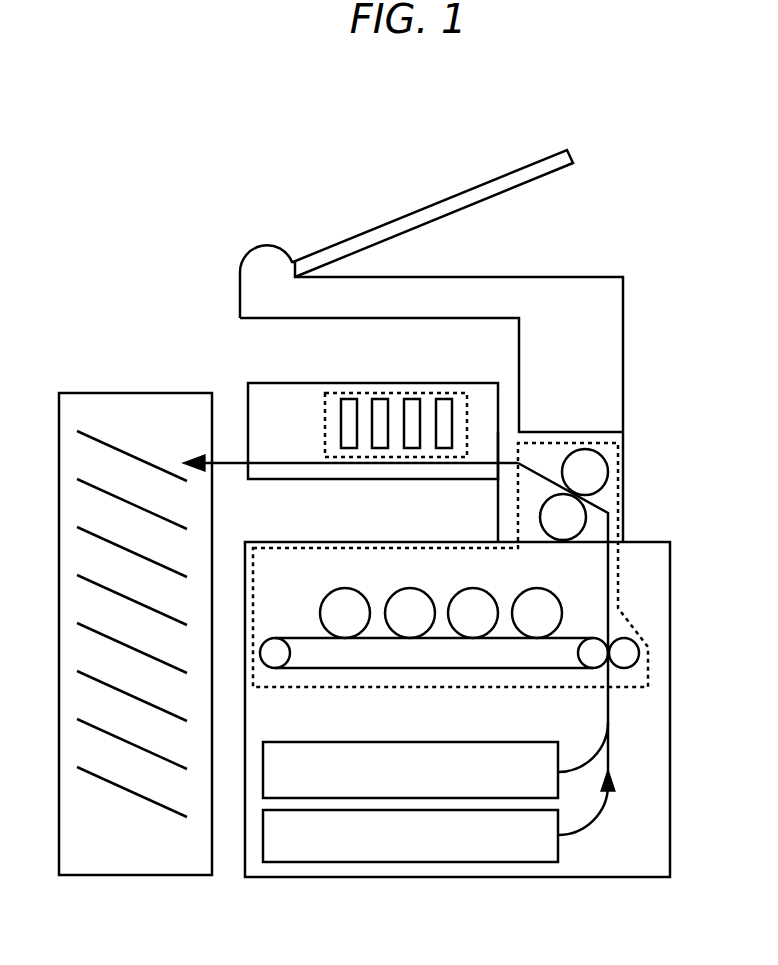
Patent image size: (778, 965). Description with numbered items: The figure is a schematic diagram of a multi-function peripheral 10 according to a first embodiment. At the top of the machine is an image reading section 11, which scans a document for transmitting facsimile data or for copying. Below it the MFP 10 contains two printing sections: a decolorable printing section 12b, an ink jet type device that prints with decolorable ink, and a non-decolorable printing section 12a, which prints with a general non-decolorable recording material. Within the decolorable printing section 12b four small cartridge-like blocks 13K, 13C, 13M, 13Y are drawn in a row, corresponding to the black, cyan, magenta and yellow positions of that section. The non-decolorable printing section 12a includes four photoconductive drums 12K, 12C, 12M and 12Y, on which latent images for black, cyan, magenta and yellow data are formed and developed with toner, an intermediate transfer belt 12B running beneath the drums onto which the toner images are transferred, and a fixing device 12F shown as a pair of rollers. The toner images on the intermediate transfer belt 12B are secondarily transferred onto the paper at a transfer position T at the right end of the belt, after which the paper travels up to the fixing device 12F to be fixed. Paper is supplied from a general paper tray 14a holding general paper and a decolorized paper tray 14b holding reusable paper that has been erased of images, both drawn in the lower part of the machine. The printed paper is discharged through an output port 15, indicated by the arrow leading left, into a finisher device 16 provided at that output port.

The multi-function peripheral 10 is at (174, 208).
The image reading section 11 is at (518, 253).
The non-decolorable printing section 12a is at (652, 658).
The decolorable printing section 12b is at (325, 425).
The intermediate transfer belt 12B is at (297, 637).
The photoconductive drum 12K is at (347, 600).
The photoconductive drum 12C is at (408, 600).
The photoconductive drum 12M is at (470, 600).
The photoconductive drum 12Y is at (537, 602).
The fixing device 12F is at (605, 499).
The black toner cartridge 13K is at (347, 402).
The cyan toner cartridge 13C is at (378, 403).
The magenta toner cartridge 13M is at (410, 403).
The yellow toner cartridge 13Y is at (440, 403).
The general paper tray 14a is at (387, 748).
The decolorized paper tray 14b is at (483, 855).
The output port 15 is at (399, 645).
The finisher device 16 is at (127, 392).
The transfer position T is at (624, 632).